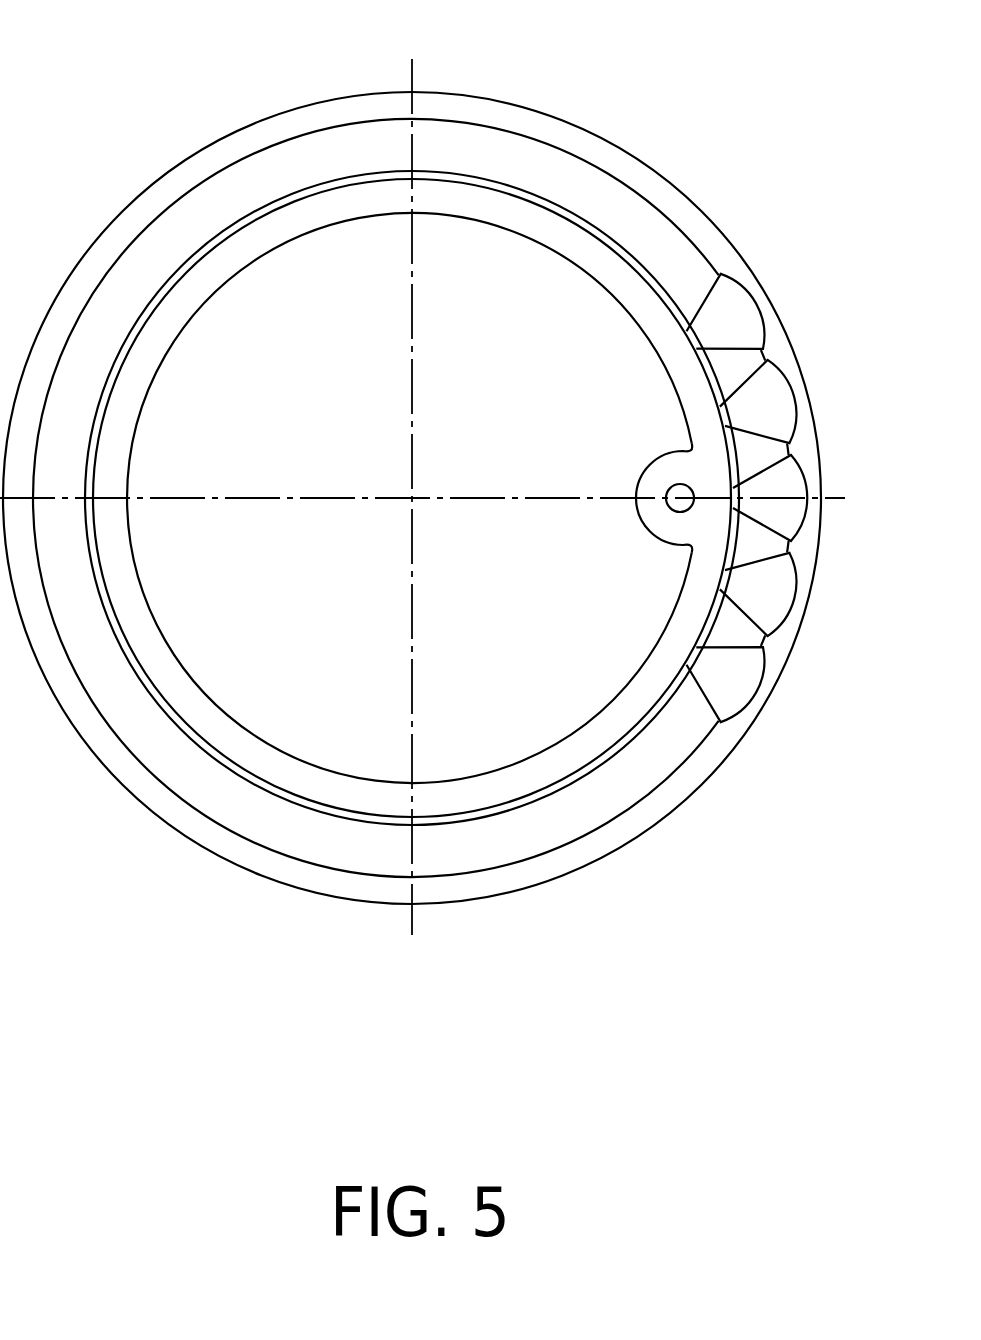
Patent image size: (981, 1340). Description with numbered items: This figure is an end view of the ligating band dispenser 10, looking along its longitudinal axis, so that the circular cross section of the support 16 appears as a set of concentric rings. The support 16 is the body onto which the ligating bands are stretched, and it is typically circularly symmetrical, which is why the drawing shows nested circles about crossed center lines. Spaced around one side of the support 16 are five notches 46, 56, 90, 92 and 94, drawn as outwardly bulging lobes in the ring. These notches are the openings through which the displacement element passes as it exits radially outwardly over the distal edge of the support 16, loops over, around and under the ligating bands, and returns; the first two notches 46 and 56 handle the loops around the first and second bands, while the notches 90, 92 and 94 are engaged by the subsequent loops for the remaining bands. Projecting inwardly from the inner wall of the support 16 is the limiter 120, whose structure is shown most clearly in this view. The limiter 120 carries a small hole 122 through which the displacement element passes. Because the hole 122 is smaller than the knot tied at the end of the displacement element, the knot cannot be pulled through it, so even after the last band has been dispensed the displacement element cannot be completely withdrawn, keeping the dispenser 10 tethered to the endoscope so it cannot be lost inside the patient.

The ligating band dispenser 10 is at (200, 91).
The support 16 is at (622, 147).
The notch 46 is at (757, 694).
The notch 56 is at (795, 600).
The notch 90 is at (807, 497).
The notch 92 is at (794, 397).
The notch 94 is at (757, 302).
The limiter 120 is at (638, 517).
The hole 122 is at (677, 508).